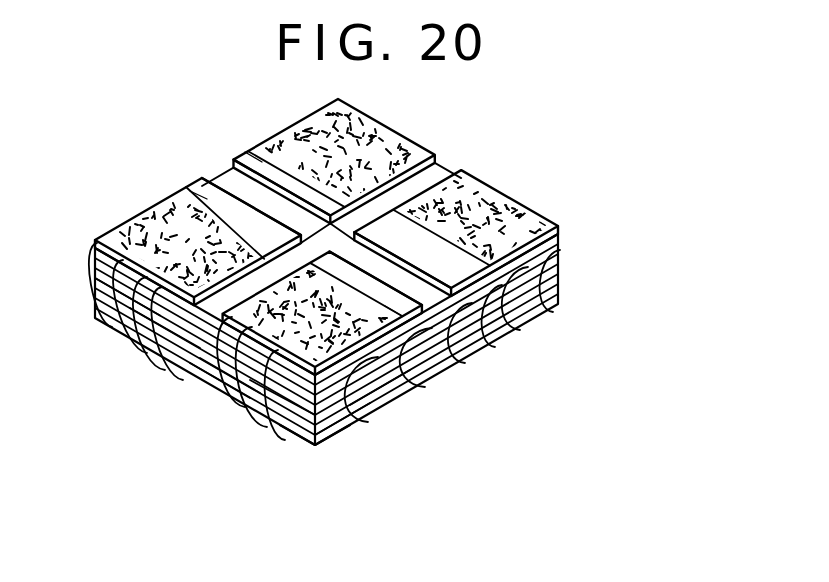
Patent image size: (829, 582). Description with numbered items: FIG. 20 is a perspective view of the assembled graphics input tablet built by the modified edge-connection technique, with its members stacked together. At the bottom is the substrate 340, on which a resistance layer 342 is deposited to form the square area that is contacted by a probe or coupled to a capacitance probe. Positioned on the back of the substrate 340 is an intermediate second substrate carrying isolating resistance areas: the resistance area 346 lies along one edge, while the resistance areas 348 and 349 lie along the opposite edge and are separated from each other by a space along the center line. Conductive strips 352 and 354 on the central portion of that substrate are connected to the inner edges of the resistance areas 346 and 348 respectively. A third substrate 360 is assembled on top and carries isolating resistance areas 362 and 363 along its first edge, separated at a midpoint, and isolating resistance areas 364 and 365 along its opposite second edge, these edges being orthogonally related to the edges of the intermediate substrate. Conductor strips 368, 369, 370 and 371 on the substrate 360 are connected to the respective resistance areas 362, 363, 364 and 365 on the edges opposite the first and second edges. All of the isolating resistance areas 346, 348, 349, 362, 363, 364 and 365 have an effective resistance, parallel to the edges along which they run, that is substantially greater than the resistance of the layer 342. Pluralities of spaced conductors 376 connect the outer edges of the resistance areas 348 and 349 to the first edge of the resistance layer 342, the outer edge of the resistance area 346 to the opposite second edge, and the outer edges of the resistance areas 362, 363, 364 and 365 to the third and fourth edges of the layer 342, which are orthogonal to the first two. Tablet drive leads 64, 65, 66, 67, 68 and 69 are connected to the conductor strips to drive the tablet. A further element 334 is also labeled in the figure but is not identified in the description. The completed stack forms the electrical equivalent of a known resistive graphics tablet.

The bottom layer 334 is at (281, 392).
The substrate 340 is at (330, 420).
The resistance layer 342 is at (312, 446).
The isolating resistance area 346 is at (106, 287).
The isolating resistance area 348 is at (375, 373).
The isolating resistance area 349 is at (379, 339).
The conductive strip 352 is at (166, 322).
The conductive strip 354 is at (230, 360).
The third substrate 360 is at (232, 186).
The isolating resistance area 362 is at (155, 225).
The isolating resistance area 363 is at (240, 365).
The isolating resistance area 364 is at (353, 121).
The isolating resistance area 365 is at (468, 188).
The conductor strip 368 is at (192, 192).
The conductor strip 369 is at (459, 270).
The conductor strip 370 is at (261, 152).
The conductor strip 371 is at (438, 249).
The spaced conductors 376 is at (113, 327).
The tablet drive lead 64 is at (570, 312).
The tablet drive lead 65 is at (395, 312).
The tablet drive lead 66 is at (222, 368).
The tablet drive lead 67 is at (136, 337).
The tablet drive lead 68 is at (195, 191).
The tablet drive lead 69 is at (252, 152).